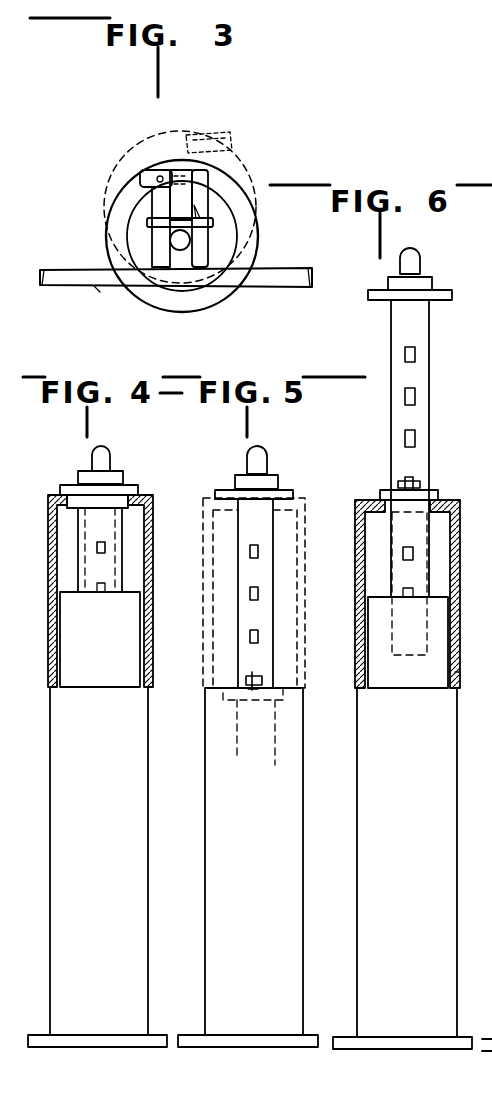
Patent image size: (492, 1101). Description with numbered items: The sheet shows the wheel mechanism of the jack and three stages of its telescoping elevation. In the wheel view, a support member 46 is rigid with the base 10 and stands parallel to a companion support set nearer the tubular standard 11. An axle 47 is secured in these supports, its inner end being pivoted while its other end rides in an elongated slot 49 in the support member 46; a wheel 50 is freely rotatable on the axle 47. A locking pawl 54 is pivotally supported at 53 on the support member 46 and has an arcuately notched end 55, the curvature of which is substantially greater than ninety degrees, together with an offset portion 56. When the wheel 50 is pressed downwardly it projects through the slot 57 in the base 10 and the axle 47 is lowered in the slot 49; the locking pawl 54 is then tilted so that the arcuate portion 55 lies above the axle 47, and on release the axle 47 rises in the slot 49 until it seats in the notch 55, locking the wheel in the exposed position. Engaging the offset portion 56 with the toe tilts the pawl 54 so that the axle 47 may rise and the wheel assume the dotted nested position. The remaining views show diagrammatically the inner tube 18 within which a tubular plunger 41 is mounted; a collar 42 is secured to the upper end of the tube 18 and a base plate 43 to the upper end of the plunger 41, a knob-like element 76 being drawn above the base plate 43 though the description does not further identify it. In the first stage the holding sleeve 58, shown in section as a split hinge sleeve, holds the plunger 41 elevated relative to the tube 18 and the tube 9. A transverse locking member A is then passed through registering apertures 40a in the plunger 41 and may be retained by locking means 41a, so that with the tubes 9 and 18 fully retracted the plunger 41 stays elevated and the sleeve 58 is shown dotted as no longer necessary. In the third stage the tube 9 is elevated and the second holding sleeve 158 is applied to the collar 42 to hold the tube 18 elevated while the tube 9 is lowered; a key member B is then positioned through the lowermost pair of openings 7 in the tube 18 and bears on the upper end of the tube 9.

In FIG. 4, the openings 7 is at (106, 548).
In FIG. 6, the openings 7 is at (415, 556).
In FIG. 4, the tube 9 is at (68, 665).
In FIG. 6, the tube 9 is at (430, 678).
In FIG. 3, the base 10 is at (290, 285).
In FIG. 4, the base 10 is at (85, 1046).
In FIG. 5, the base 10 is at (248, 1046).
In FIG. 6, the base 10 is at (388, 1050).
In FIG. 4, the tubular standard 11 is at (65, 813).
In FIG. 5, the tubular standard 11 is at (215, 836).
In FIG. 6, the tubular standard 11 is at (372, 831).
In FIG. 4, the inner tube 18 is at (80, 570).
In FIG. 5, the inner tube 18 is at (278, 740).
In FIG. 6, the inner tube 18 is at (430, 583).
In FIG. 4, the plunger 41 is at (110, 558).
In FIG. 5, the plunger 41 is at (267, 576).
In FIG. 6, the plunger 41 is at (421, 386).
In FIG. 5, the apertures 40a is at (250, 594).
In FIG. 6, the apertures 40a is at (416, 439).
In FIG. 5, the locking means 41a is at (262, 681).
In FIG. 6, the locking means 41a is at (404, 479).
In FIG. 4, the collar 42 is at (73, 509).
In FIG. 5, the collar 42 is at (285, 700).
In FIG. 6, the collar 42 is at (388, 491).
In FIG. 4, the base plate 43 is at (66, 487).
In FIG. 5, the base plate 43 is at (226, 490).
In FIG. 6, the base plate 43 is at (372, 291).
In FIG. 3, the support member 46 is at (160, 246).
In FIG. 3, the axle 47 is at (176, 236).
In FIG. 3, the elongated slot 49 is at (185, 251).
In FIG. 3, the wheel 50 is at (256, 256).
In FIG. 3, the pivot 53 is at (158, 172).
In FIG. 3, the locking pawl 54 is at (205, 192).
In FIG. 3, the arcuately notched end 55 is at (210, 156).
In FIG. 3, the offset portion 56 is at (214, 222).
In FIG. 3, the slot 57 is at (97, 290).
In FIG. 4, the holding sleeve 58 is at (152, 500).
In FIG. 5, the holding sleeve 58 is at (300, 498).
In FIG. 4, the knob 76 is at (108, 461).
In FIG. 5, the knob 76 is at (260, 463).
In FIG. 6, the knob 76 is at (417, 266).
In FIG. 6, the holding sleeve 158 is at (455, 503).
In FIG. 5, the locking member A is at (250, 690).
In FIG. 6, the locking member A is at (416, 484).
In FIG. 6, the key member B is at (491, 672).